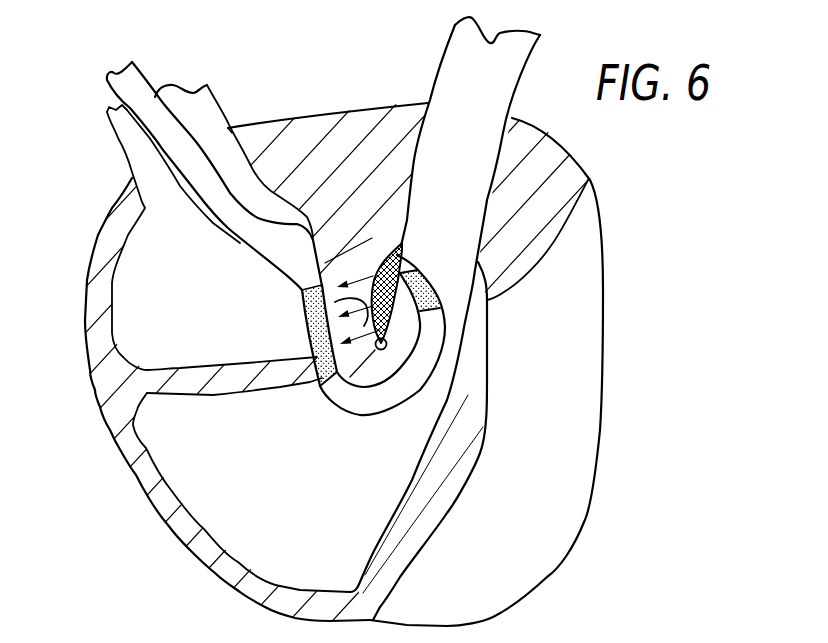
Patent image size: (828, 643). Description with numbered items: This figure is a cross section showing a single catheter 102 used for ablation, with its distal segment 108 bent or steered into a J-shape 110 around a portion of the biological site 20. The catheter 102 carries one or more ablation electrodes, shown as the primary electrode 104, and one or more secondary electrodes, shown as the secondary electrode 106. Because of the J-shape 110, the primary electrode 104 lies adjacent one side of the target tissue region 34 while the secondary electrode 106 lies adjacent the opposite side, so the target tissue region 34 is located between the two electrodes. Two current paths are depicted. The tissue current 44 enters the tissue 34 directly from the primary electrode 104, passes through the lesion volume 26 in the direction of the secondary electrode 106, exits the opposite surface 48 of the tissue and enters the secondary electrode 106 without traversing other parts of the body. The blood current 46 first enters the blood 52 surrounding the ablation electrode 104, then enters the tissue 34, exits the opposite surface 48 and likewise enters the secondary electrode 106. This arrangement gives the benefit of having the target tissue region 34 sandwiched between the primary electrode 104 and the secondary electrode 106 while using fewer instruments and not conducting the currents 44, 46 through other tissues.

The biological site 20 is at (150, 515).
The lesion volume 26 is at (385, 348).
The target tissue region 34 is at (407, 229).
The tissue current 44 is at (313, 307).
The blood current 46 is at (362, 252).
The opposite surface of the tissue 48 is at (297, 223).
The blood 52 is at (408, 440).
The catheter 102 is at (172, 128).
The ablation electrode 104 is at (441, 287).
The secondary electrode 106 is at (313, 328).
The distal segment 108 is at (330, 421).
The J-shape 110 is at (390, 400).